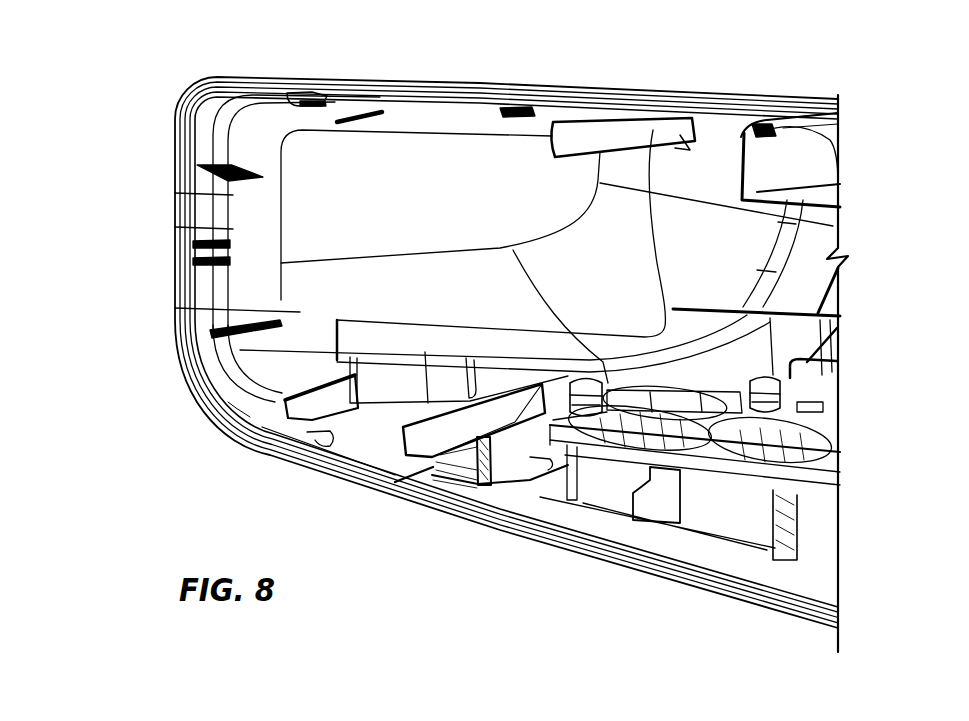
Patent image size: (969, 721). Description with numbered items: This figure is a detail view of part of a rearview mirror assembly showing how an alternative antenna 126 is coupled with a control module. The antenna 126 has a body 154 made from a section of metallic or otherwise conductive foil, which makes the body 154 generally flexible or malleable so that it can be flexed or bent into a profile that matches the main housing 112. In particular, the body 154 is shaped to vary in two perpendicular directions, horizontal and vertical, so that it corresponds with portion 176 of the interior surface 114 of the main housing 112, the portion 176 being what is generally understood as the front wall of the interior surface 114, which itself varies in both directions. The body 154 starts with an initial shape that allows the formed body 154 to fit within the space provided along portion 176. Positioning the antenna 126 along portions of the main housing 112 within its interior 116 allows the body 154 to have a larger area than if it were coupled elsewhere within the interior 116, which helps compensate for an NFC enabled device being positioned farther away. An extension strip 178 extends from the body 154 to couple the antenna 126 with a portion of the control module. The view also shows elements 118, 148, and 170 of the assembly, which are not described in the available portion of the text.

The main housing 112 is at (621, 65).
The interior surface 114 is at (250, 203).
The interior 116 is at (228, 392).
The retention clips 118 is at (183, 140).
The antenna 126 is at (611, 212).
The lower edge rail 148 is at (628, 563).
The body 154 is at (382, 153).
The support brackets 170 is at (597, 485).
The portion 176 is at (665, 257).
The extension strip 178 is at (322, 350).